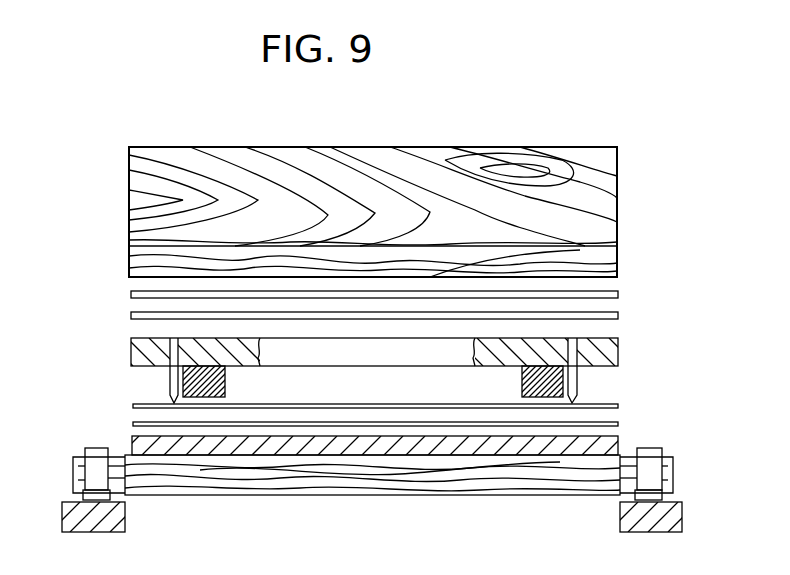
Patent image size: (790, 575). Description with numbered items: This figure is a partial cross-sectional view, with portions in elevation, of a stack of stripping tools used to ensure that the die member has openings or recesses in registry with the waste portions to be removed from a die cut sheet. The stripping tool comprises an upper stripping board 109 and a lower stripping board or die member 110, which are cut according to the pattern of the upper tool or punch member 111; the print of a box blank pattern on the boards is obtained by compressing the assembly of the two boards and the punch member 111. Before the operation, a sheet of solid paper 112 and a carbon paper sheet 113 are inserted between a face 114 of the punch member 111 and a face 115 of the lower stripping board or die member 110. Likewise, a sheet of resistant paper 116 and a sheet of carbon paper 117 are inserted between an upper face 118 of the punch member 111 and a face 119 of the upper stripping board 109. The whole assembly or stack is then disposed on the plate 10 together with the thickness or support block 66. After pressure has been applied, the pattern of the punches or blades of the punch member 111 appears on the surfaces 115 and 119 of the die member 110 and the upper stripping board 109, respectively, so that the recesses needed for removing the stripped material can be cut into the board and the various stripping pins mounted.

The thickness or support block 66 is at (367, 160).
The upper stripping board 109 is at (617, 250).
The face of the upper stripping board 119 is at (138, 283).
The sheet of carbon paper 117 is at (618, 294).
The sheet of resistant paper 116 is at (620, 315).
The upper face of the punch member 118 is at (140, 350).
The upper tool or punch member 111 is at (618, 356).
The face of the punch member 114 is at (604, 367).
The sheet of solid paper 112 is at (620, 405).
The carbon paper sheet 113 is at (133, 424).
The face of the lower stripping board 115 is at (132, 443).
The lower stripping board or die member 110 is at (610, 446).
The plate 10 is at (75, 458).